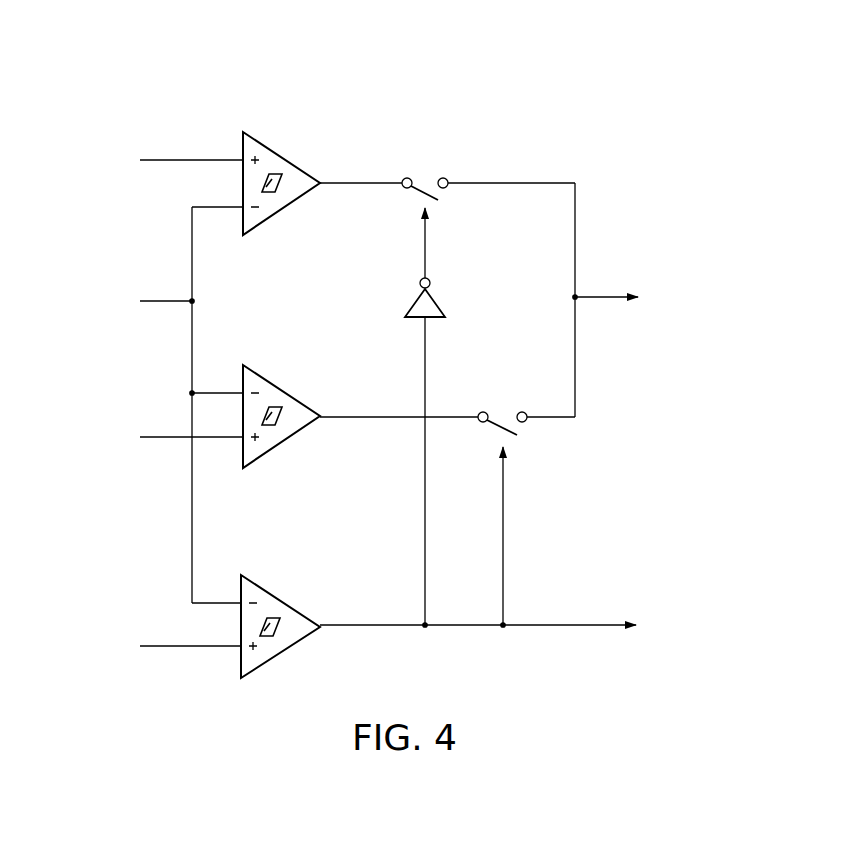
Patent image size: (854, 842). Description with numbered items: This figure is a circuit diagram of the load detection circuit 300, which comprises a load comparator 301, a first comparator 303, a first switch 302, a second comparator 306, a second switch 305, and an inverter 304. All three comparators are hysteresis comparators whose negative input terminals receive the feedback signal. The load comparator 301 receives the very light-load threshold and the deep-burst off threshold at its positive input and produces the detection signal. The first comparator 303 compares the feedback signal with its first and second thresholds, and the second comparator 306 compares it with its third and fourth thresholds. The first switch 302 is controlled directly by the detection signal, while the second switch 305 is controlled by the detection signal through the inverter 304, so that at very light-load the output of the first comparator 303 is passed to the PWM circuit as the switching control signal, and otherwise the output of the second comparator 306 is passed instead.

The load detection circuit 300 is at (638, 52).
The load comparator 301 is at (280, 623).
The first switch 302 is at (502, 408).
The first comparator 303 is at (281, 415).
The inverter 304 is at (450, 451).
The second switch 305 is at (424, 210).
The second comparator 306 is at (281, 181).